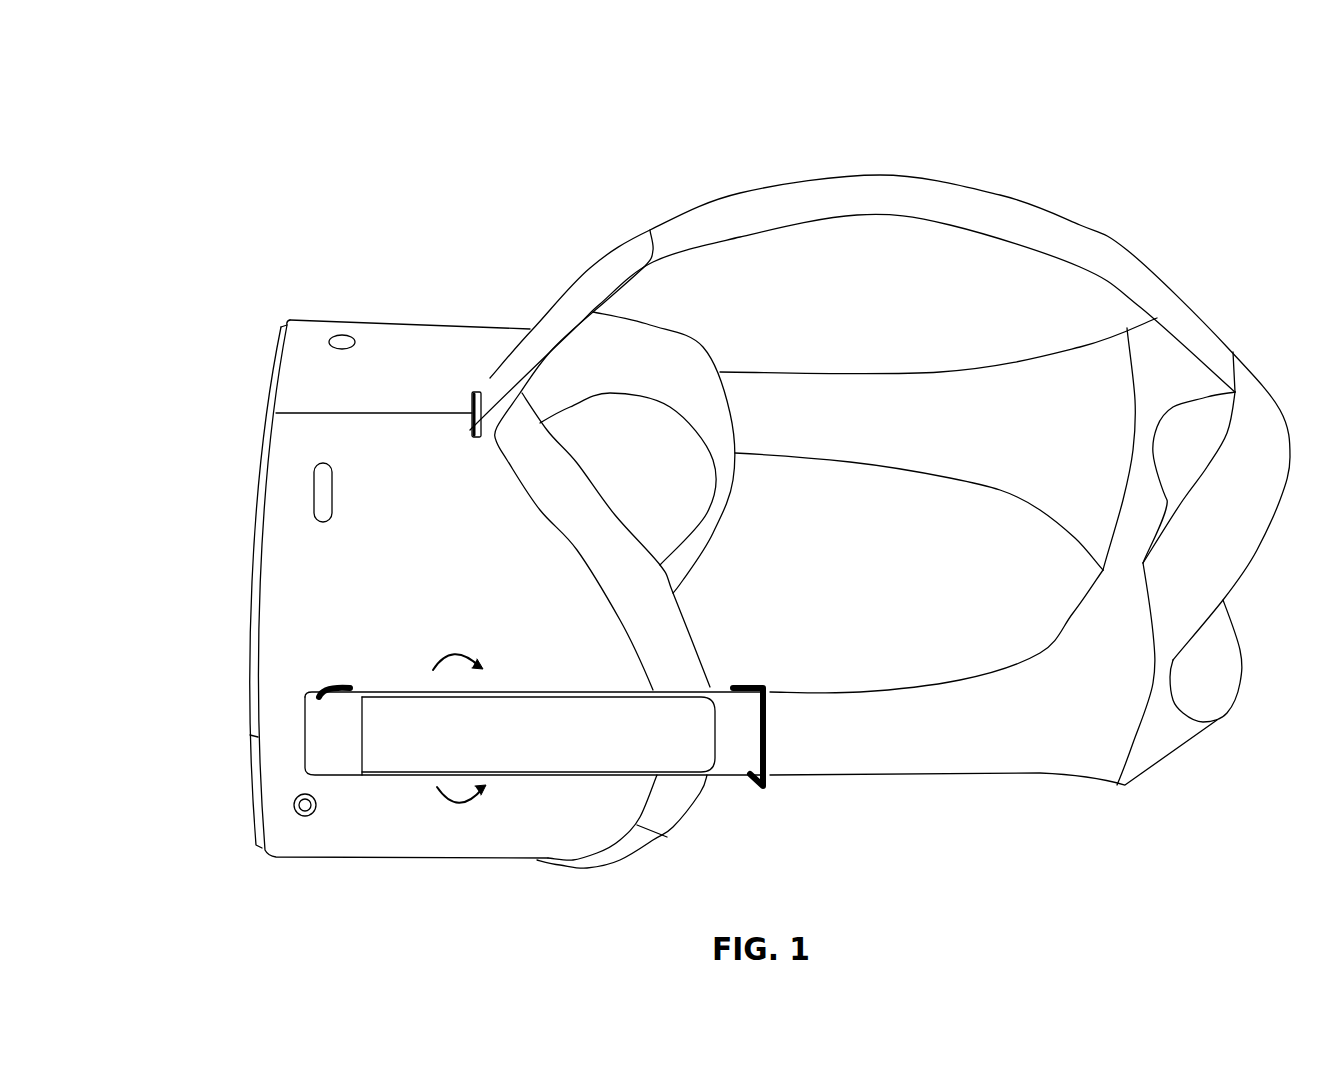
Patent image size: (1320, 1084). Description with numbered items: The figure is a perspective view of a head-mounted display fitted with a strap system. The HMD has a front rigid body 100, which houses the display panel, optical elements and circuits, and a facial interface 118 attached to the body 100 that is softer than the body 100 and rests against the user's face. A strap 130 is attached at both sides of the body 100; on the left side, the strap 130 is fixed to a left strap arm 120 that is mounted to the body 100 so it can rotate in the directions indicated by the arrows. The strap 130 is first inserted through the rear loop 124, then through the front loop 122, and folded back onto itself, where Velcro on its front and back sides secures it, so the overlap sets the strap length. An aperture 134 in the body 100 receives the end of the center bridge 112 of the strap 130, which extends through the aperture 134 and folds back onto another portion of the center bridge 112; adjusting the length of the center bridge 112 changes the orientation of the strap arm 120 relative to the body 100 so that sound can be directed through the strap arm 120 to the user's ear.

The front rigid body 100 is at (298, 547).
The center bridge 112 is at (810, 198).
The facial interface 118 is at (673, 592).
The left strap arm 120 is at (392, 690).
The front loop 122 is at (332, 680).
The rear loop 124 is at (760, 683).
The strap 130 is at (883, 702).
The aperture 134 is at (493, 387).